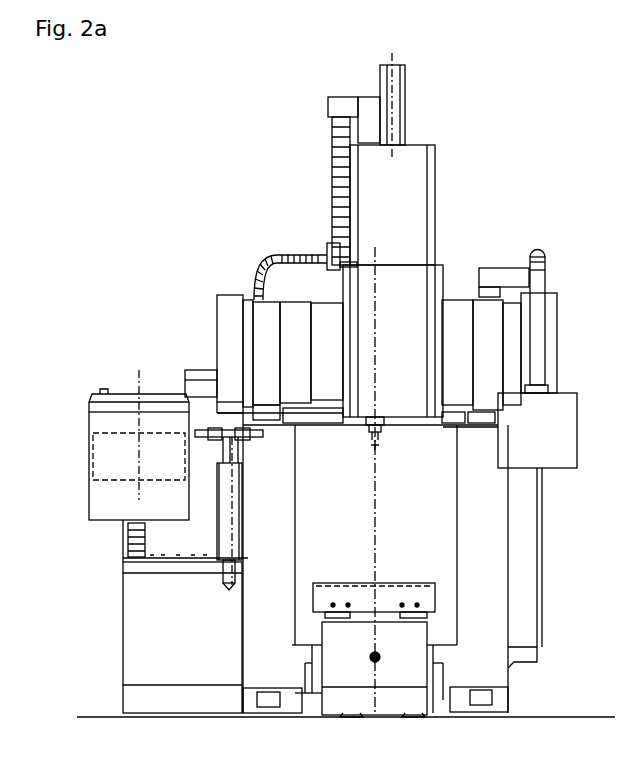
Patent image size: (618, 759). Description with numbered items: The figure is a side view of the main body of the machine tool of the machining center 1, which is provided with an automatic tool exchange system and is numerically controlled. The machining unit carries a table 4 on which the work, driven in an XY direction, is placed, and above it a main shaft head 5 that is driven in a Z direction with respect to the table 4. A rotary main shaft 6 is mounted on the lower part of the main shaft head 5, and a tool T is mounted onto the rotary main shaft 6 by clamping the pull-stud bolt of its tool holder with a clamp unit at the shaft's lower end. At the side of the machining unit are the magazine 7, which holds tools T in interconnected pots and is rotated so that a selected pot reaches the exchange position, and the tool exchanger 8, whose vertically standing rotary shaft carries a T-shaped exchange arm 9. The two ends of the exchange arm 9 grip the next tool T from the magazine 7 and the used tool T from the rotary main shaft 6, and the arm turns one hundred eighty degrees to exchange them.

The machining center 1 is at (178, 130).
The table 4 is at (437, 588).
The main shaft head 5 is at (410, 283).
The rotary main shaft 6 is at (388, 432).
The magazine 7 is at (107, 458).
The tool exchanger 8 is at (222, 503).
The exchange arm 9 is at (222, 433).
The tool T is at (378, 447).